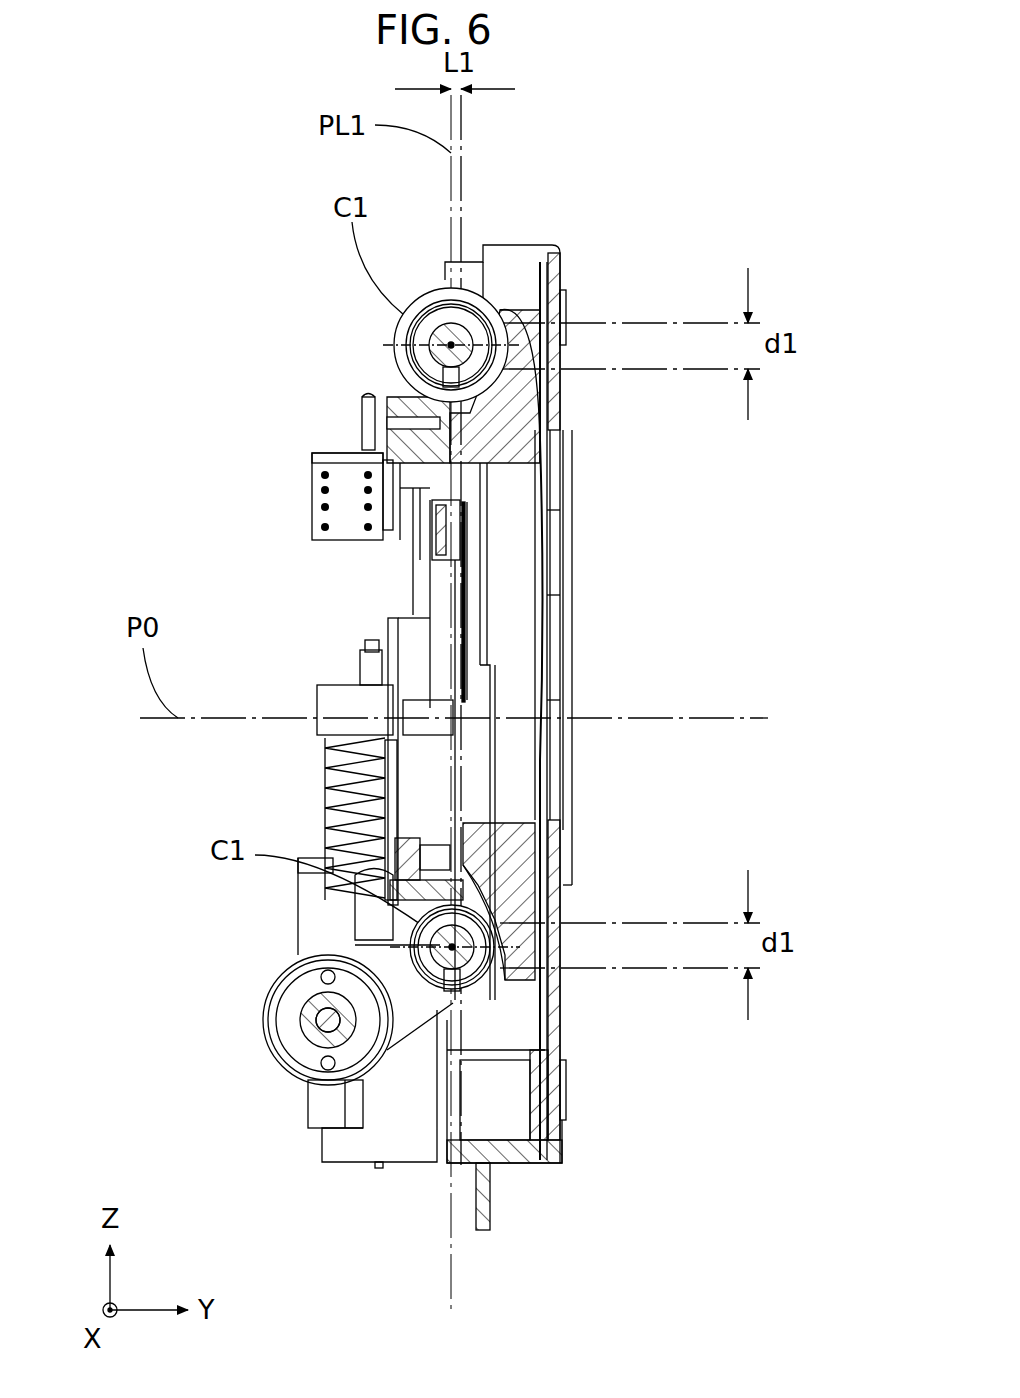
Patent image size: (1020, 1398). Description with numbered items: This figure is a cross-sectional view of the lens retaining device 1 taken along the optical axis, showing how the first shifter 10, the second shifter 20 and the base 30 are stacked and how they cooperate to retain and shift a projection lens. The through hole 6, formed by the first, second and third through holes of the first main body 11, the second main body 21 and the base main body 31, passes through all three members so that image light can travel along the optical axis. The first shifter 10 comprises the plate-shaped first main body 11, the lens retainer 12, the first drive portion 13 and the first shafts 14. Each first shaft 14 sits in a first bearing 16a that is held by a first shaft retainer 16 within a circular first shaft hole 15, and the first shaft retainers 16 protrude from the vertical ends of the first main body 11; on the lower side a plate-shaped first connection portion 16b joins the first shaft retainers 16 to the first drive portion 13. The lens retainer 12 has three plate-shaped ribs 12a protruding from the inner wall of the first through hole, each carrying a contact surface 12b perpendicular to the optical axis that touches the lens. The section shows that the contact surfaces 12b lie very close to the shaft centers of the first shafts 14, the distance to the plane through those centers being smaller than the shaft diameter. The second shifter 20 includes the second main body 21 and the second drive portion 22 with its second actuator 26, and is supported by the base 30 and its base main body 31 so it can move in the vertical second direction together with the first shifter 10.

The lens retaining device 1 is at (694, 173).
The through hole 6 is at (508, 635).
The first shifter 10 is at (245, 975).
The first main body 11 is at (395, 408).
The lens retainer 12 is at (423, 642).
The rib 12a is at (470, 543).
The contact surface 12b is at (455, 602).
The first drive portion 13 is at (265, 1036).
The first shaft 14 is at (408, 300).
The first shaft hole 15 is at (418, 352).
The first shaft retainer 16 is at (440, 298).
The first bearing 16a is at (390, 335).
The first connection portion 16b is at (414, 990).
The second shifter 20 is at (548, 855).
The second main body 21 is at (523, 438).
The second drive portion 22 is at (335, 1165).
The second actuator 26 is at (340, 1146).
The base 30 is at (540, 1165).
The base main body 31 is at (552, 262).